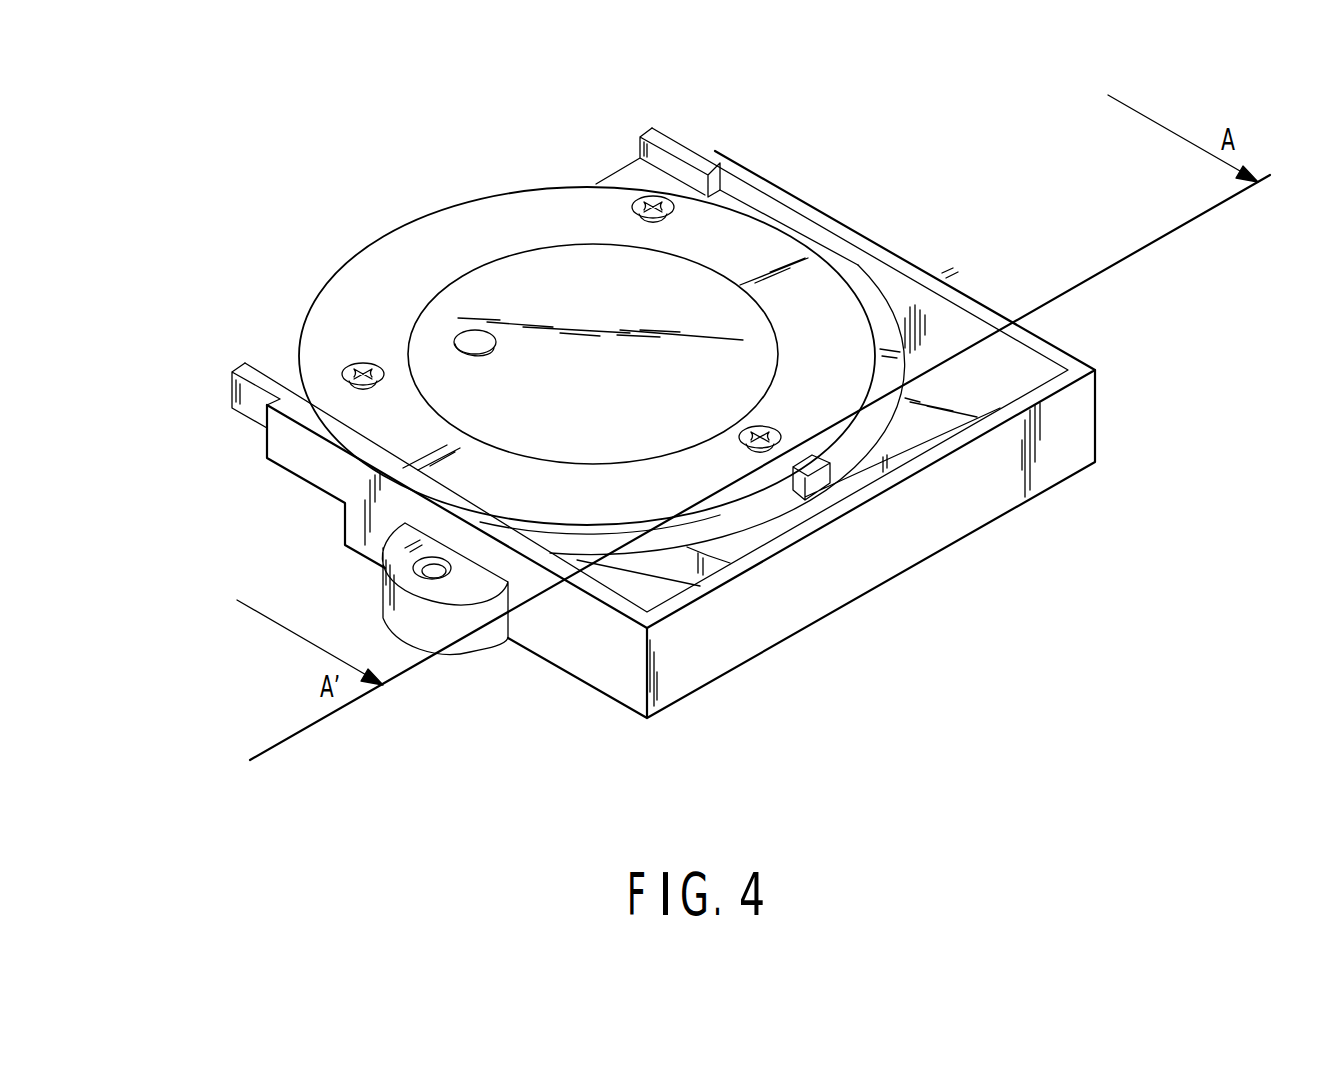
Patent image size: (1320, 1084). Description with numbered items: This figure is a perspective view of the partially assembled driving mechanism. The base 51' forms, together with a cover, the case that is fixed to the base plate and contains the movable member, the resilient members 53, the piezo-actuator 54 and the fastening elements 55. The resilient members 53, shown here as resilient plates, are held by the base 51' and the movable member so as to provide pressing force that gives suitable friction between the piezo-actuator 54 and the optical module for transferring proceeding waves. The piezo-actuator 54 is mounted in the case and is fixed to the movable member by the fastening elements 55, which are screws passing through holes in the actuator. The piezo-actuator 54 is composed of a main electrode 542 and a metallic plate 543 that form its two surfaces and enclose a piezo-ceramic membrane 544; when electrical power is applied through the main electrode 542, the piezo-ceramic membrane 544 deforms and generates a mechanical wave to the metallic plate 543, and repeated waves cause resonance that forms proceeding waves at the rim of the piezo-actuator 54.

The base 51' is at (675, 368).
The resilient members 53 is at (900, 475).
The piezo-actuator 54 is at (453, 213).
The fastening elements 55 is at (658, 208).
The main electrode 542 is at (455, 342).
The metallic plate 543 is at (402, 420).
The piezo-ceramic membrane 544 is at (437, 307).